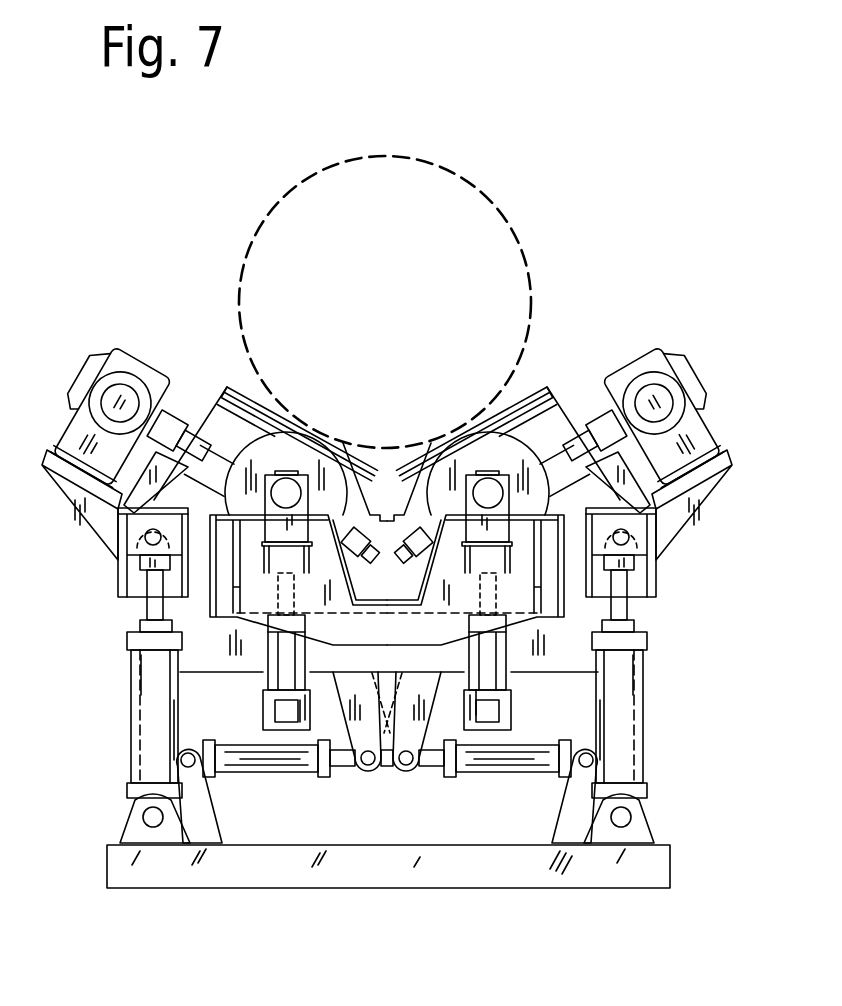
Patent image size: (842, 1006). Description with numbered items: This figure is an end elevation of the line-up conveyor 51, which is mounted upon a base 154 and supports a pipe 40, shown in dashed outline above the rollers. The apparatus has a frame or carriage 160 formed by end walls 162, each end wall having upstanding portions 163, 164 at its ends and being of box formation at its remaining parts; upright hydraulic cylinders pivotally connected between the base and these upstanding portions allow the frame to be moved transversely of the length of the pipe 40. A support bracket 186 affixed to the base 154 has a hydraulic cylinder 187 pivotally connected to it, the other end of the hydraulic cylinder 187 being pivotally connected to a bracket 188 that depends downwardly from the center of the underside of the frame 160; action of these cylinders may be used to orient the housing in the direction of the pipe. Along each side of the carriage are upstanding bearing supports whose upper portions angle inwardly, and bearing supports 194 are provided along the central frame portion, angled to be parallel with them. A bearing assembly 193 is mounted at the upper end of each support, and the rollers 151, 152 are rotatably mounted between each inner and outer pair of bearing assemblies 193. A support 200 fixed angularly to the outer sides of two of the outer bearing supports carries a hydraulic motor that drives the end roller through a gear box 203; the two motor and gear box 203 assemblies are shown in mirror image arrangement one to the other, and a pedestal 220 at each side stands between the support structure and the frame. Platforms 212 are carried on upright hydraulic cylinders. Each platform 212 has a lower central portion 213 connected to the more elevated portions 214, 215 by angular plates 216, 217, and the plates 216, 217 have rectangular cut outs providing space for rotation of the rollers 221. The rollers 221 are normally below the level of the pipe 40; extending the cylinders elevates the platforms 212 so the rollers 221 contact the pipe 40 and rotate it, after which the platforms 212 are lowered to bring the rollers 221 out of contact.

The pipe 40 is at (478, 198).
The line-up conveyor 51 is at (660, 666).
The roller 151 is at (250, 400).
The roller 152 is at (565, 492).
The base 154 is at (672, 862).
The frame or carriage 160 is at (586, 680).
The end wall 162 is at (533, 665).
The upstanding portion 163 is at (118, 612).
The upstanding portion 164 is at (650, 612).
The support bracket 186 is at (212, 815).
The hydraulic cylinder 187 is at (252, 776).
The bracket 188 is at (414, 606).
The bearing assembly 193 is at (356, 598).
The bearing support 194 is at (418, 578).
The support 200 is at (70, 503).
The gear box 203 is at (128, 350).
The platform 212 is at (452, 736).
The lower central portion 213 is at (437, 640).
The elevated portion 214 is at (216, 495).
The elevated portion 215 is at (575, 450).
The angular plate 216 is at (326, 633).
The angular plate 217 is at (448, 633).
The pedestal 220 is at (118, 598).
The roller 221 is at (262, 400).